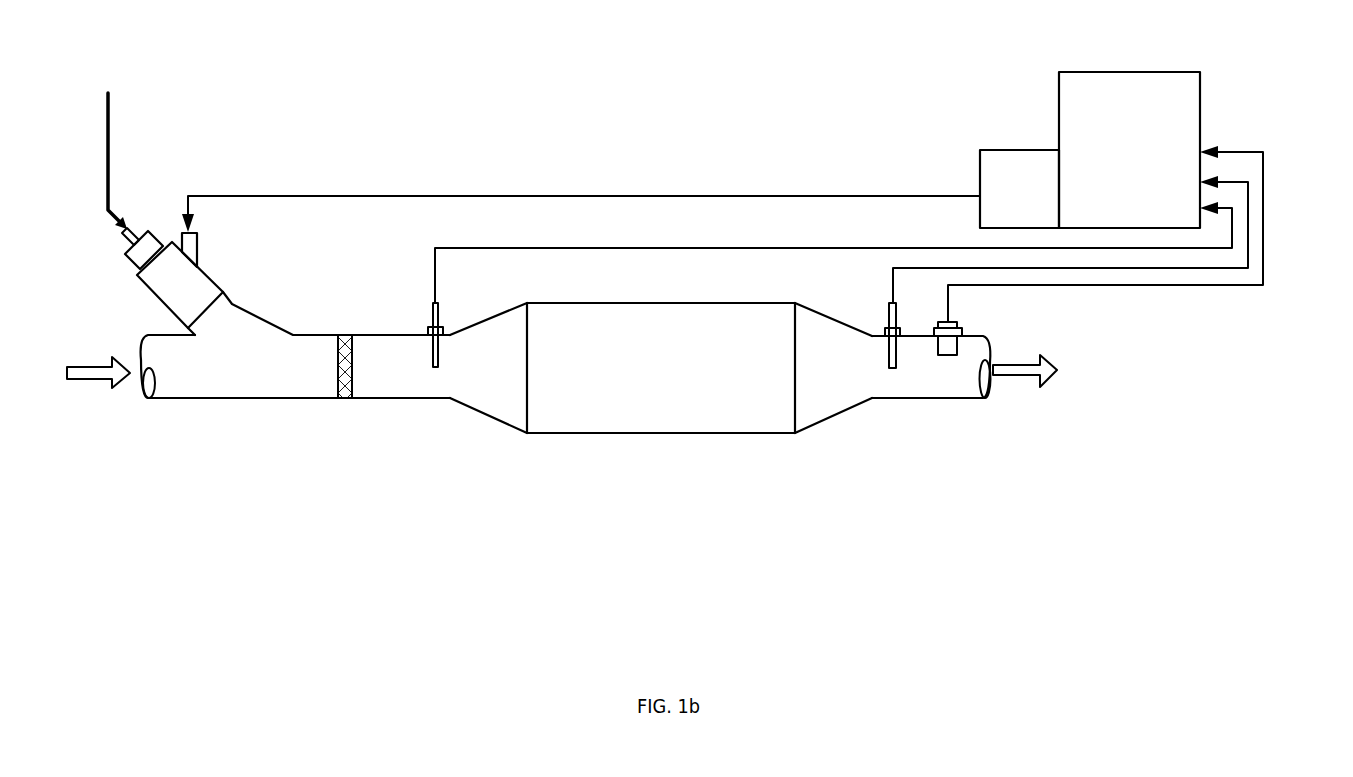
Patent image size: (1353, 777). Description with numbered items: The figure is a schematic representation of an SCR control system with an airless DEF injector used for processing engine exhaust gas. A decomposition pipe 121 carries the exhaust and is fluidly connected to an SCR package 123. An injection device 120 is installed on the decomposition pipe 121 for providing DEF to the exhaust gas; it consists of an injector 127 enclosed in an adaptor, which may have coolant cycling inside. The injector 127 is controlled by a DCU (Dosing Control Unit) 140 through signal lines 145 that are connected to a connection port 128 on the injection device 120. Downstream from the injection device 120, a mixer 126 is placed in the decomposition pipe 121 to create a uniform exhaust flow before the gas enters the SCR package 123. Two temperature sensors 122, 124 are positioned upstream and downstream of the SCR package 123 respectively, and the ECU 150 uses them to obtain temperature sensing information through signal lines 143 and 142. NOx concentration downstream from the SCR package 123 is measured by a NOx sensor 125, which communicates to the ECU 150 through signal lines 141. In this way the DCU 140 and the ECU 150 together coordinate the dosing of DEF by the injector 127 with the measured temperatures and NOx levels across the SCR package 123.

The injection device 120 is at (220, 274).
The decomposition pipe 121 is at (202, 400).
The temperature sensor 122 is at (430, 318).
The SCR package 123 is at (653, 303).
The temperature sensor 124 is at (888, 315).
The NOx sensor 125 is at (960, 323).
The mixer 126 is at (355, 395).
The injector 127 is at (130, 247).
The connection port 128 is at (199, 243).
The DCU (Dosing Control Unit) 140 is at (1000, 243).
The signal lines 141 is at (1263, 152).
The signal lines 142 is at (1248, 208).
The signal lines 143 is at (1232, 248).
The signal lines 145 is at (658, 196).
The ECU 150 is at (1142, 56).